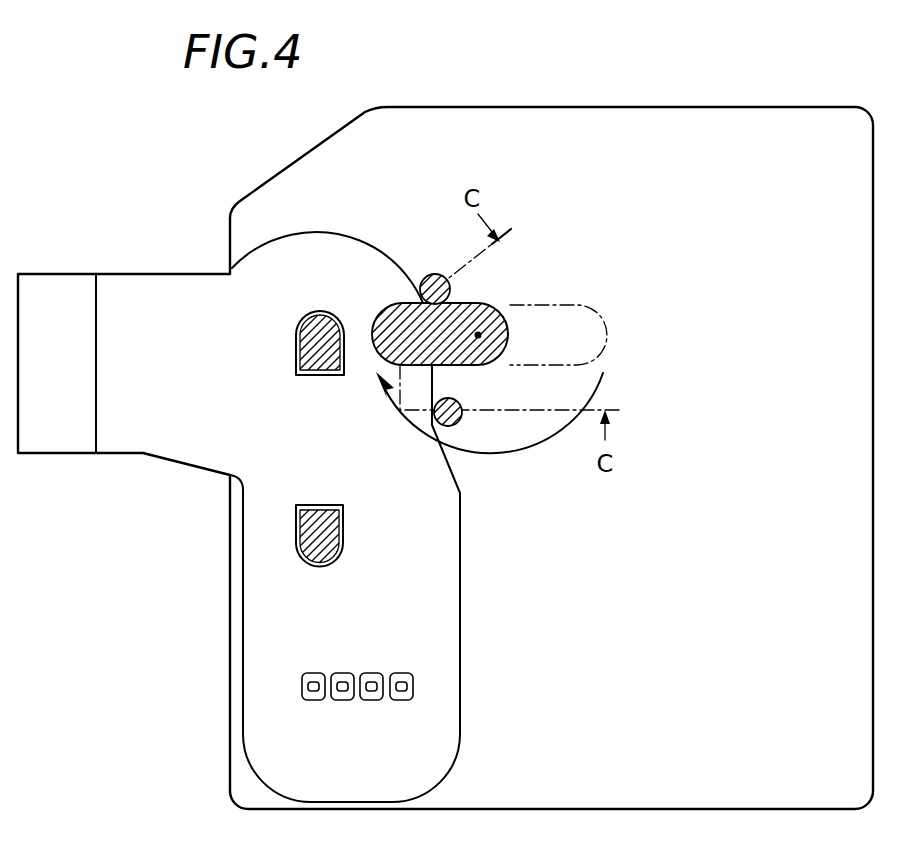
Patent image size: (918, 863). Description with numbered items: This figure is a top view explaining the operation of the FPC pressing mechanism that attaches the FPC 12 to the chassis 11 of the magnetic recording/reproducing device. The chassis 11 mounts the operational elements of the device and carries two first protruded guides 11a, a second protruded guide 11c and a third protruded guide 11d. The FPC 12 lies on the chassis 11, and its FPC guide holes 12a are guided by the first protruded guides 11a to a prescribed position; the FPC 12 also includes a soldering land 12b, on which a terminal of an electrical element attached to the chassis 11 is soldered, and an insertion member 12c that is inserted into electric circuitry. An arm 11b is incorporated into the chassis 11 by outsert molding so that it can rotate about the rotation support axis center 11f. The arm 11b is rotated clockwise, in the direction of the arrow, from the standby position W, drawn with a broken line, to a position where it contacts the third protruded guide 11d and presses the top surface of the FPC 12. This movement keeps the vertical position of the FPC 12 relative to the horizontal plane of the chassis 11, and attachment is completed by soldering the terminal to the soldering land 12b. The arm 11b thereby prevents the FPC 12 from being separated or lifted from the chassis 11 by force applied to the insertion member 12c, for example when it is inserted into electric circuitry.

The chassis 11 is at (700, 124).
The first protruded guide 11a is at (307, 350).
The arm 11b is at (386, 322).
The second protruded guide 11c is at (456, 426).
The third protruded guide 11d is at (431, 318).
The rotation support axis center 11f is at (483, 340).
The FPC 12 is at (170, 293).
The FPC guide hole 12a is at (303, 316).
The soldering land 12b is at (298, 705).
The insertion member 12c is at (60, 287).
The standby position W is at (575, 303).